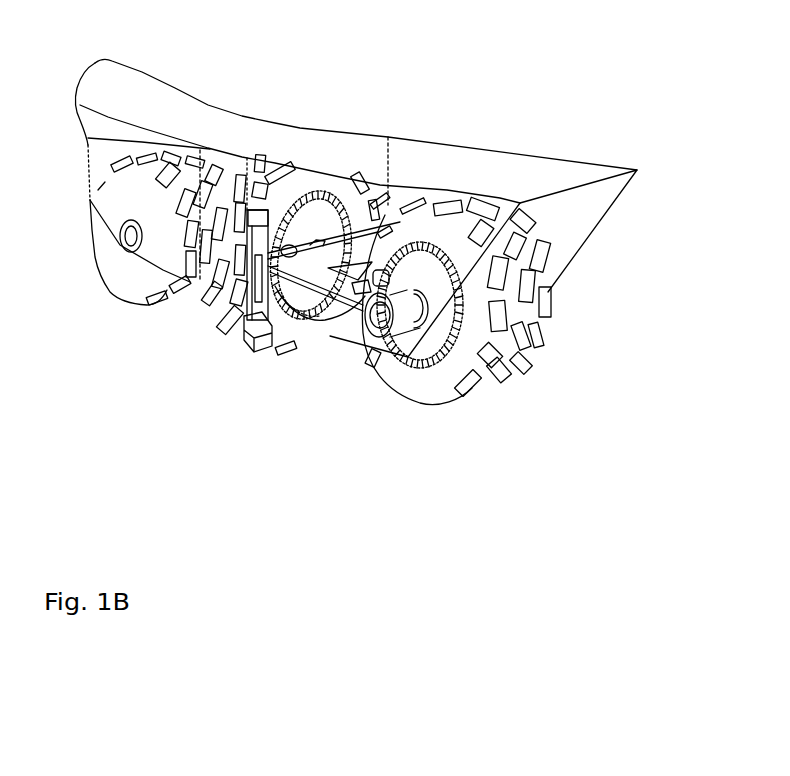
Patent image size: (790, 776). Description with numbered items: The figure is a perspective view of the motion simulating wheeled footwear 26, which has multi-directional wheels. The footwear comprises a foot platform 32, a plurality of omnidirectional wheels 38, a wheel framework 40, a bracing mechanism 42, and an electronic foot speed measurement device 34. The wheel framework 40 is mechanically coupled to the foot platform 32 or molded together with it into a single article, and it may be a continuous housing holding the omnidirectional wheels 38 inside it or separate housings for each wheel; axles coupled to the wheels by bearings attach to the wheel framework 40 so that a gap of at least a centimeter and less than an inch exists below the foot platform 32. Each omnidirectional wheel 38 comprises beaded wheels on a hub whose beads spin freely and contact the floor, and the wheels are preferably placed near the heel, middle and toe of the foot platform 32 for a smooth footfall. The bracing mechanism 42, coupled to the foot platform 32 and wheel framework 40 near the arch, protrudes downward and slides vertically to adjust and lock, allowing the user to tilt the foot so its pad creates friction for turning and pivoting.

The wheeled footwear 26 is at (522, 223).
The foot platform 32 is at (267, 140).
The electronic foot speed measurement device 34 is at (295, 263).
The omnidirectional wheels 38 is at (223, 333).
The wheel framework 40 is at (88, 163).
The bracing mechanism 42 is at (260, 358).